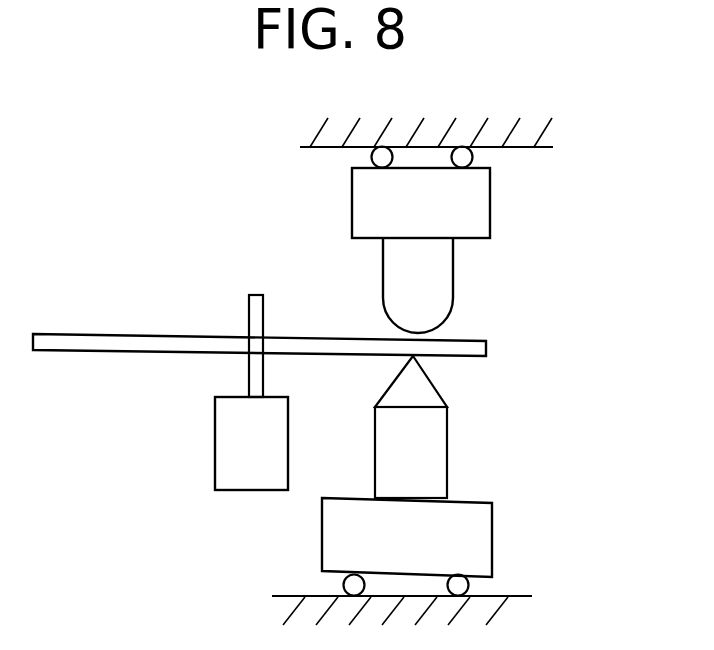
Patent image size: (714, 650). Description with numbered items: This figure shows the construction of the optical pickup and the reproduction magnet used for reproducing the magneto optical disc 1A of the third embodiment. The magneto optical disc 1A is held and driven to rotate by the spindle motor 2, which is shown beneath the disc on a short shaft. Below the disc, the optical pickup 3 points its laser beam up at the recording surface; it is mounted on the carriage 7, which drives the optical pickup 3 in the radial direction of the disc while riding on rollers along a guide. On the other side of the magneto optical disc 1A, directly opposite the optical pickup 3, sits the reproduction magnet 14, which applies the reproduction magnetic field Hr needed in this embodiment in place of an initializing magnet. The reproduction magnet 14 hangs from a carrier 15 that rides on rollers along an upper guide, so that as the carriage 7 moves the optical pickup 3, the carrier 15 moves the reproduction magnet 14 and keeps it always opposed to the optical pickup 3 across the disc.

The magneto optical disc 1A is at (148, 335).
The spindle motor 2 is at (228, 445).
The optical pickup 3 is at (433, 463).
The carriage 7 is at (478, 542).
The reproduction magnet 14 is at (438, 280).
The carrier 15 is at (475, 203).